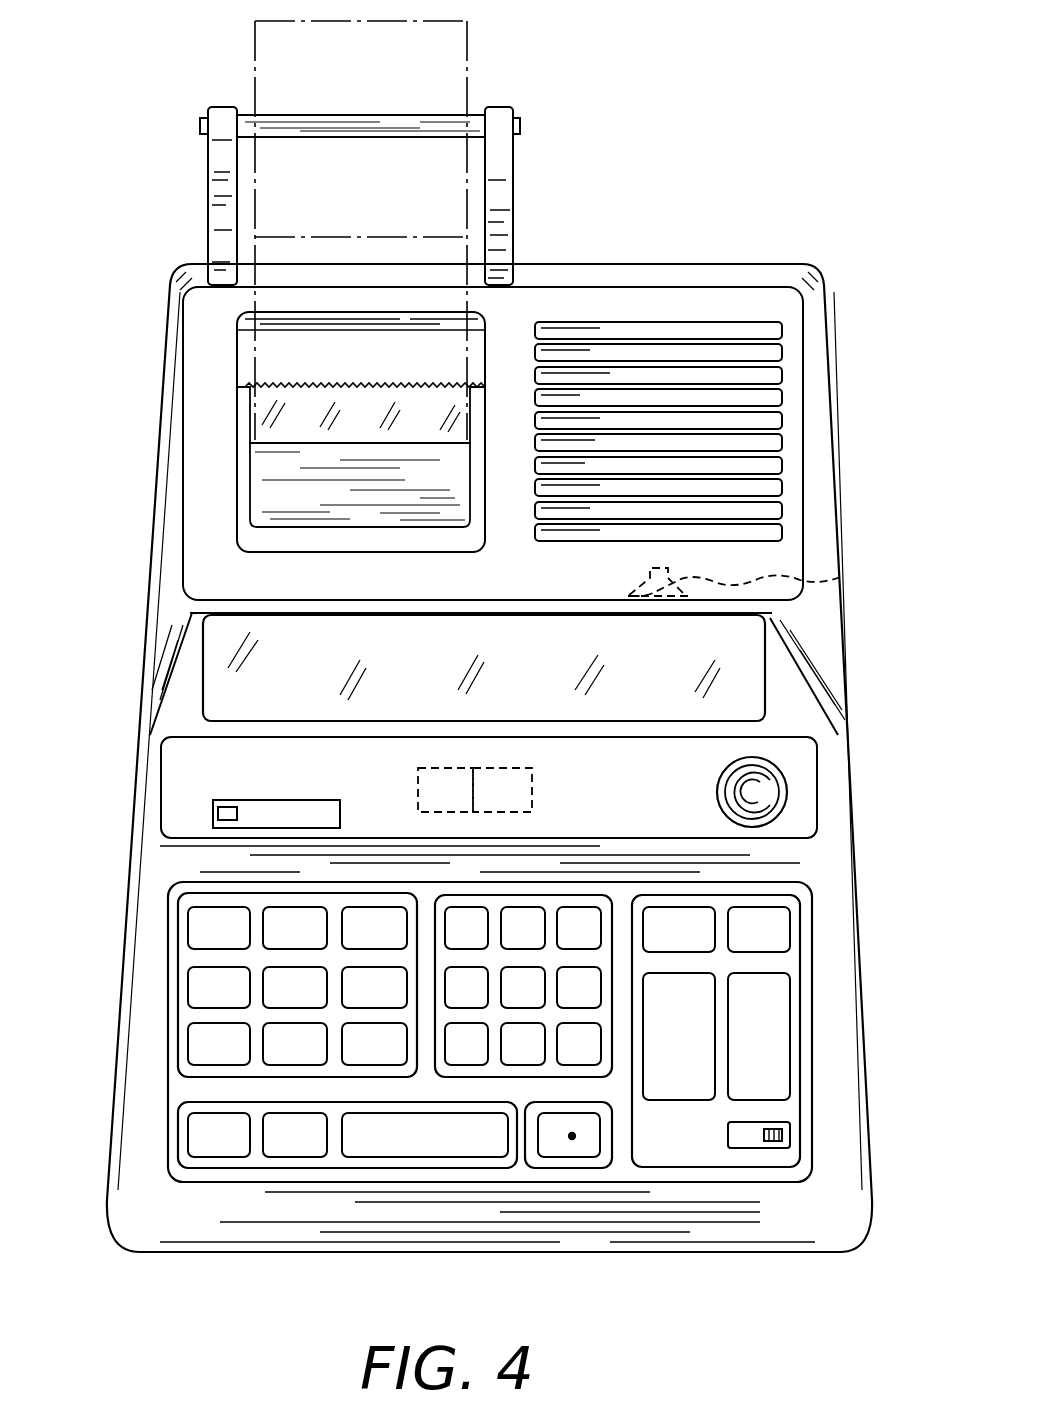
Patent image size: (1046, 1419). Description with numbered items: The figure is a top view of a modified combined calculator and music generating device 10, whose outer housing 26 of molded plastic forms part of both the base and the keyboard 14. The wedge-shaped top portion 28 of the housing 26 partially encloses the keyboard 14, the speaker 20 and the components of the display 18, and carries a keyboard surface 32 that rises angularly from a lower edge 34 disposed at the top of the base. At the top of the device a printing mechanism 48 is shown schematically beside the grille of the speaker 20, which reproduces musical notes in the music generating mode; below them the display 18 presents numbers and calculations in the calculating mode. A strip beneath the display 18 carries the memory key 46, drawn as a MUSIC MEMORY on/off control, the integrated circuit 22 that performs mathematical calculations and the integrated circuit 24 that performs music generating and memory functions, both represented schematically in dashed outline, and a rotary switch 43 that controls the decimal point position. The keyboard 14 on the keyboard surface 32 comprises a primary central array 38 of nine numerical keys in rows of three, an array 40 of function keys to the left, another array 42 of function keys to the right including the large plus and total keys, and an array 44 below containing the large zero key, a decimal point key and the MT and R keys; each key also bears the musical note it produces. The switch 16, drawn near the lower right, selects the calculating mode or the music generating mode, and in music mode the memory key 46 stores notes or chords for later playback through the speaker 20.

The combined calculator and music generating device 10 is at (722, 224).
The keyboard 14 is at (490, 1031).
The switch 16 is at (793, 1132).
The display 18 is at (735, 668).
The speaker 20 is at (843, 576).
The integrated circuit 22 is at (441, 782).
The integrated circuit 24 is at (503, 788).
The outer housing 26 is at (834, 454).
The top portion 28 is at (828, 1066).
The keyboard surface 32 is at (545, 1086).
The lower edge 34 is at (722, 1255).
The primary central array 38 is at (552, 896).
The array of keys to the left 40 is at (177, 990).
The array to the right 42 is at (776, 1031).
The rotary switch 43 is at (755, 792).
The array below the primary array 44 is at (350, 1172).
The memory key 46 is at (211, 789).
The printing mechanism 48 is at (420, 369).